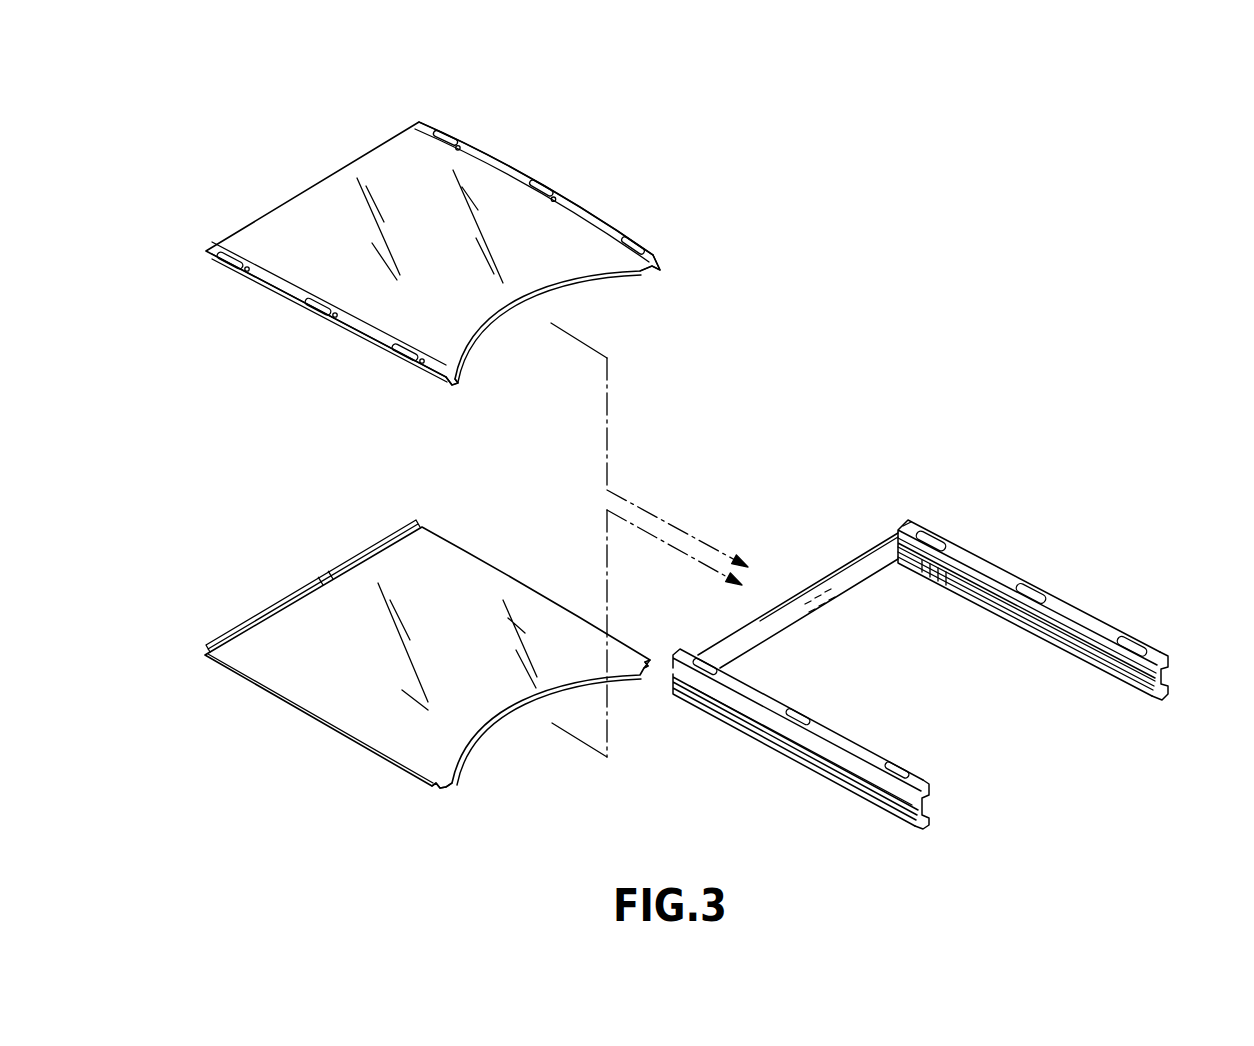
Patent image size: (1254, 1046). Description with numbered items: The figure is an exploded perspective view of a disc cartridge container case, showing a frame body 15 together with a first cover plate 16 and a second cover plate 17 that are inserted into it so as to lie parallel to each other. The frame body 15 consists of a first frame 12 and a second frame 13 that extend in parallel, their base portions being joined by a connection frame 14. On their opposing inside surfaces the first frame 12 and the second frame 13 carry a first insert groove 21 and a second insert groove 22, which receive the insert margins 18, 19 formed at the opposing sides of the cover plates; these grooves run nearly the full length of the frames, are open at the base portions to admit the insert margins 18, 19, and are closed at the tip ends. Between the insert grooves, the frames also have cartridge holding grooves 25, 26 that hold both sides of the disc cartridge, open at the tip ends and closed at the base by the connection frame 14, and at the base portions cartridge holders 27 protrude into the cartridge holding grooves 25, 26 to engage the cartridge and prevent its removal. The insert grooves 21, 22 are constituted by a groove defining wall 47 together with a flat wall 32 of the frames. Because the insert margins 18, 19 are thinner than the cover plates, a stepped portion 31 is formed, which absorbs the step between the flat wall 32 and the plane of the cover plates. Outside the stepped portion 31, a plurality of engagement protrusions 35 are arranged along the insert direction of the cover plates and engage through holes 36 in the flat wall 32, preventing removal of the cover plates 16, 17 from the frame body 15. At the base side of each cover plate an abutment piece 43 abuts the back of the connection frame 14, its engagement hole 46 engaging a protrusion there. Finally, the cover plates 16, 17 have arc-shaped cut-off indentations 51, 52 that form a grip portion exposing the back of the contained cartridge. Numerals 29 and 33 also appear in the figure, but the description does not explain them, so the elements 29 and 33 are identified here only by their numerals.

The first frame 12 is at (1066, 612).
The second frame 13 is at (740, 716).
The connection frame 14 is at (780, 626).
The frame body 15 is at (960, 658).
The first cover plate 16 is at (325, 195).
The second cover plate 17 is at (480, 572).
The insert margin 18 is at (572, 205).
The insert margin 19 is at (272, 298).
The first insert groove 21 is at (1126, 660).
The second insert groove 22 is at (988, 612).
The cartridge holding groove 25 is at (1068, 638).
The cartridge holding groove 26 is at (931, 801).
The cartridge holder 27 is at (930, 572).
The rib 29 is at (880, 790).
The stepped portion 31 is at (588, 225).
The flat wall 32 is at (1095, 625).
The tab 33 is at (658, 270).
The engagement protrusion 35 is at (455, 133).
The through hole 36 is at (930, 533).
The abutment piece 43 is at (355, 560).
The engagement hole 46 is at (325, 592).
The groove defining wall 47 is at (885, 548).
The cut-off indentation of an arc shape 51 is at (600, 282).
The cut-off indentation of an arc shape 52 is at (474, 744).